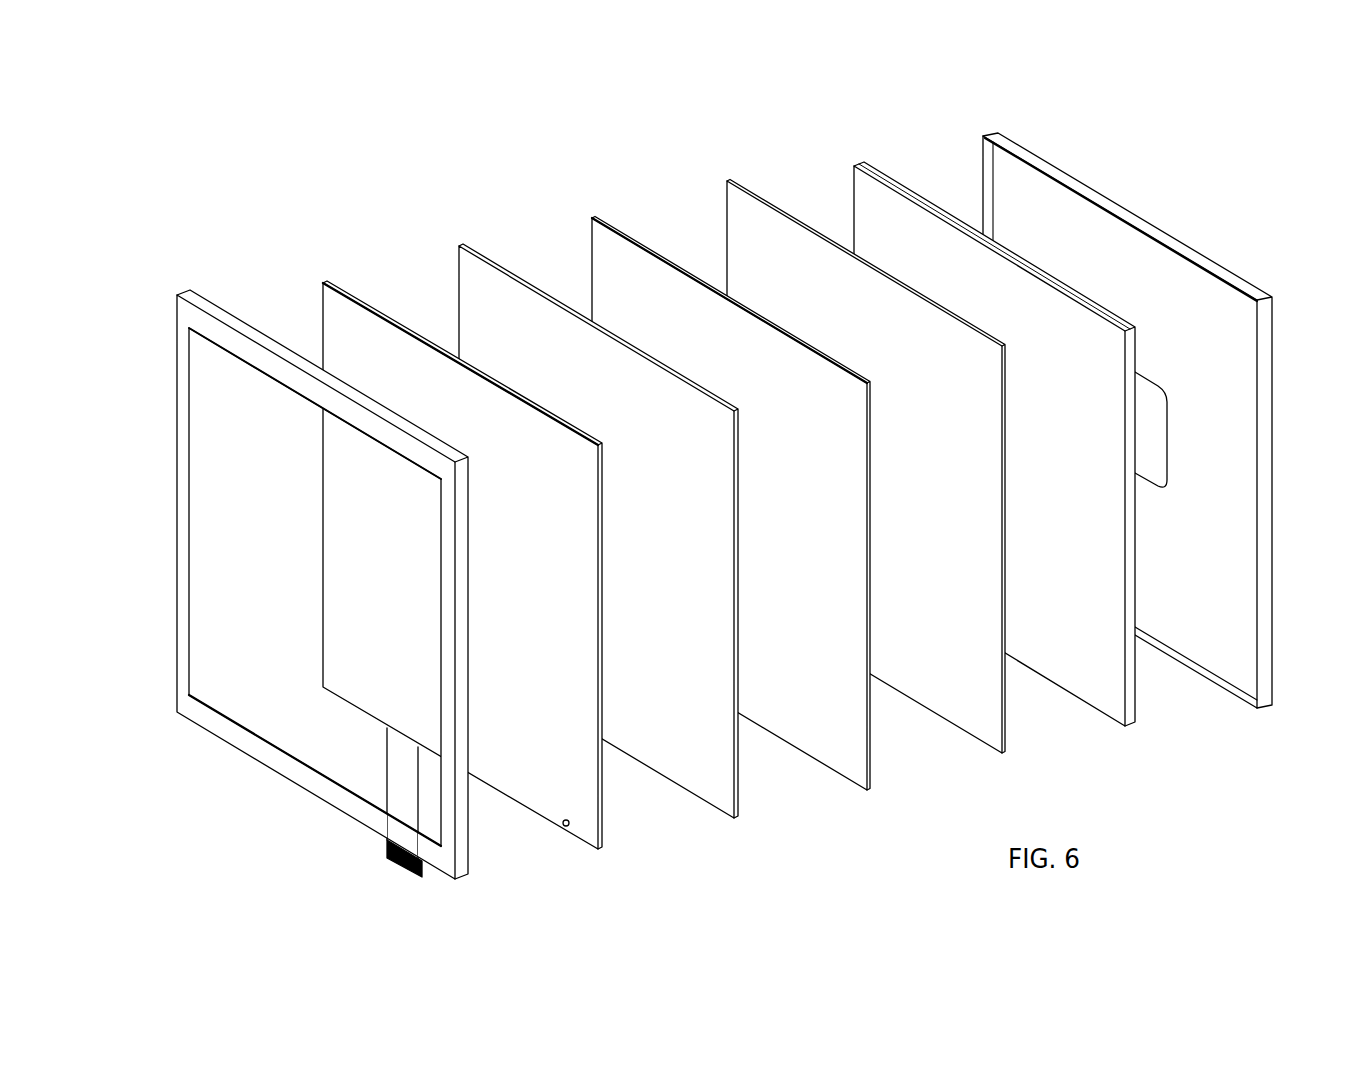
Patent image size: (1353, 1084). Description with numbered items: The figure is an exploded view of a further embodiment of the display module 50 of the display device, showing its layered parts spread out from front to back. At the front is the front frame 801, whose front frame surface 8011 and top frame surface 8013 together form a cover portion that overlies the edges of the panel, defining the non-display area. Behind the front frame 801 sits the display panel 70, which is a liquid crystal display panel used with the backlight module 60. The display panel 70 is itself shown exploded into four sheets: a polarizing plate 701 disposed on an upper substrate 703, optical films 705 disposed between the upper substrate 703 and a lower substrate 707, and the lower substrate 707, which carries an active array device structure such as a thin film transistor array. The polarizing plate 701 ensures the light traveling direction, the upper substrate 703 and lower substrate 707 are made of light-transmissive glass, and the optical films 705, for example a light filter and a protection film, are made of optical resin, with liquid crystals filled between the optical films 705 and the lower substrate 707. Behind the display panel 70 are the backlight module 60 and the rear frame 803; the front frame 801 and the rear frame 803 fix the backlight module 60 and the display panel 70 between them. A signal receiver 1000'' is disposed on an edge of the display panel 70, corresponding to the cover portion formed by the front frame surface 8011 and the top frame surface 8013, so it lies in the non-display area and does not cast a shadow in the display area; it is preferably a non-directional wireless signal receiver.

The display module 50 is at (230, 131).
The backlight module 60 is at (854, 166).
The display panel 70 is at (664, 495).
The polarizing plate 701 is at (462, 537).
The upper substrate 703 is at (459, 246).
The optical films 705 is at (592, 218).
The lower substrate 707 is at (727, 181).
The front frame 801 is at (305, 537).
The front frame surface 8011 is at (177, 317).
The top frame surface 8013 is at (203, 308).
The rear frame 803 is at (1125, 221).
The signal receiver 1000'' is at (541, 859).